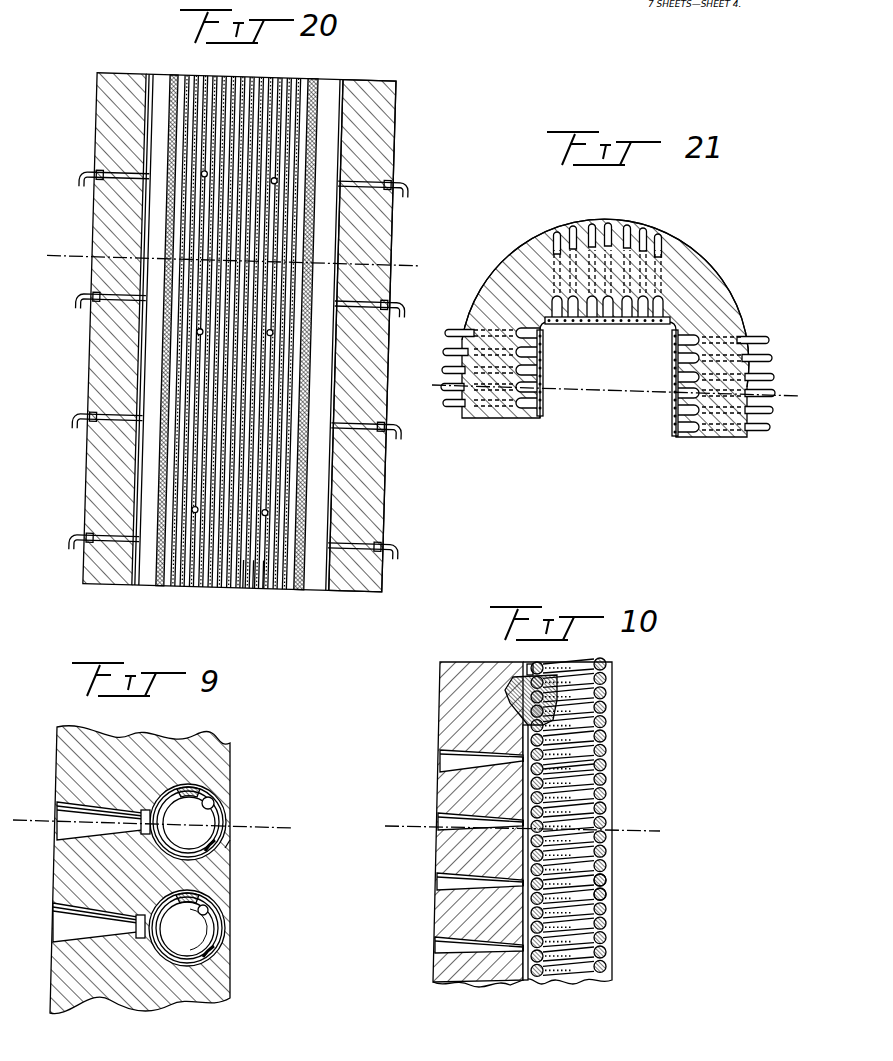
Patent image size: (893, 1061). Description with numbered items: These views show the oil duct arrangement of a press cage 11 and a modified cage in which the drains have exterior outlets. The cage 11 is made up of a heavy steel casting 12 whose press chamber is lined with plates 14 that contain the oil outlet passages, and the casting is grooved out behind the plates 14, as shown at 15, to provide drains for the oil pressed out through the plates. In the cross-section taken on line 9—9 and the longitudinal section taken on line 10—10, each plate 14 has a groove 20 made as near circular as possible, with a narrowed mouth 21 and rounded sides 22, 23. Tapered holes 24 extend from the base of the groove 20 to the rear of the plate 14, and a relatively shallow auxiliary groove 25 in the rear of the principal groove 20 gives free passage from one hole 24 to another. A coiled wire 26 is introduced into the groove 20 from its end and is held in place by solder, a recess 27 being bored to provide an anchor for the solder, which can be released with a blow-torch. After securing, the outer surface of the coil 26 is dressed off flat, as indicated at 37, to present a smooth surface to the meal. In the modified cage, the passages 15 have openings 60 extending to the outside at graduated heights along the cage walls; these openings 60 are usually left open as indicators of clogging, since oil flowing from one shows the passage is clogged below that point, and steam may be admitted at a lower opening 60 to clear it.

In FIG. 10, the section line 9— 9 is at (405, 820).
In FIG. 9, the section line 10— 10 is at (25, 825).
In FIG. 20, the press cage 11 is at (383, 478).
In FIG. 21, the press cage 11 is at (700, 275).
In FIG. 20, the steel casting 12 is at (363, 514).
In FIG. 21, the steel casting 12 is at (696, 312).
In FIG. 20, the cage lining plate 14 is at (160, 513).
In FIG. 21, the cage lining plate 14 is at (647, 322).
In FIG. 9, the cage lining plate 14 is at (220, 757).
In FIG. 10, the cage lining plate 14 is at (455, 729).
In FIG. 20, the oil groove 15 is at (143, 503).
In FIG. 21, the oil groove 15 is at (573, 310).
In FIG. 10, the oil groove 15 is at (525, 852).
In FIG. 20, the groove 20 is at (250, 583).
In FIG. 21, the groove 20 is at (436, 395).
In FIG. 9, the groove 20 is at (212, 818).
In FIG. 10, the groove 20 is at (590, 715).
In FIG. 20, the narrowed mouth 21 is at (71, 251).
In FIG. 9, the narrowed mouth 21 is at (215, 808).
In FIG. 9, the rounded side 22 is at (190, 783).
In FIG. 9, the rounded side 23 is at (200, 876).
In FIG. 9, the tapered hole 24 is at (73, 835).
In FIG. 10, the tapered hole 24 is at (460, 773).
In FIG. 9, the auxiliary groove 25 is at (140, 834).
In FIG. 10, the auxiliary groove 25 is at (527, 853).
In FIG. 9, the coiled wire 26 is at (210, 852).
In FIG. 10, the coiled wire 26 is at (583, 773).
In FIG. 10, the recess 27 is at (508, 692).
In FIG. 9, the dressed flat surface 37 is at (226, 830).
In FIG. 10, the dressed flat surface 37 is at (605, 905).
In FIG. 20, the opening 60 is at (118, 180).
In FIG. 21, the opening 60 is at (672, 270).